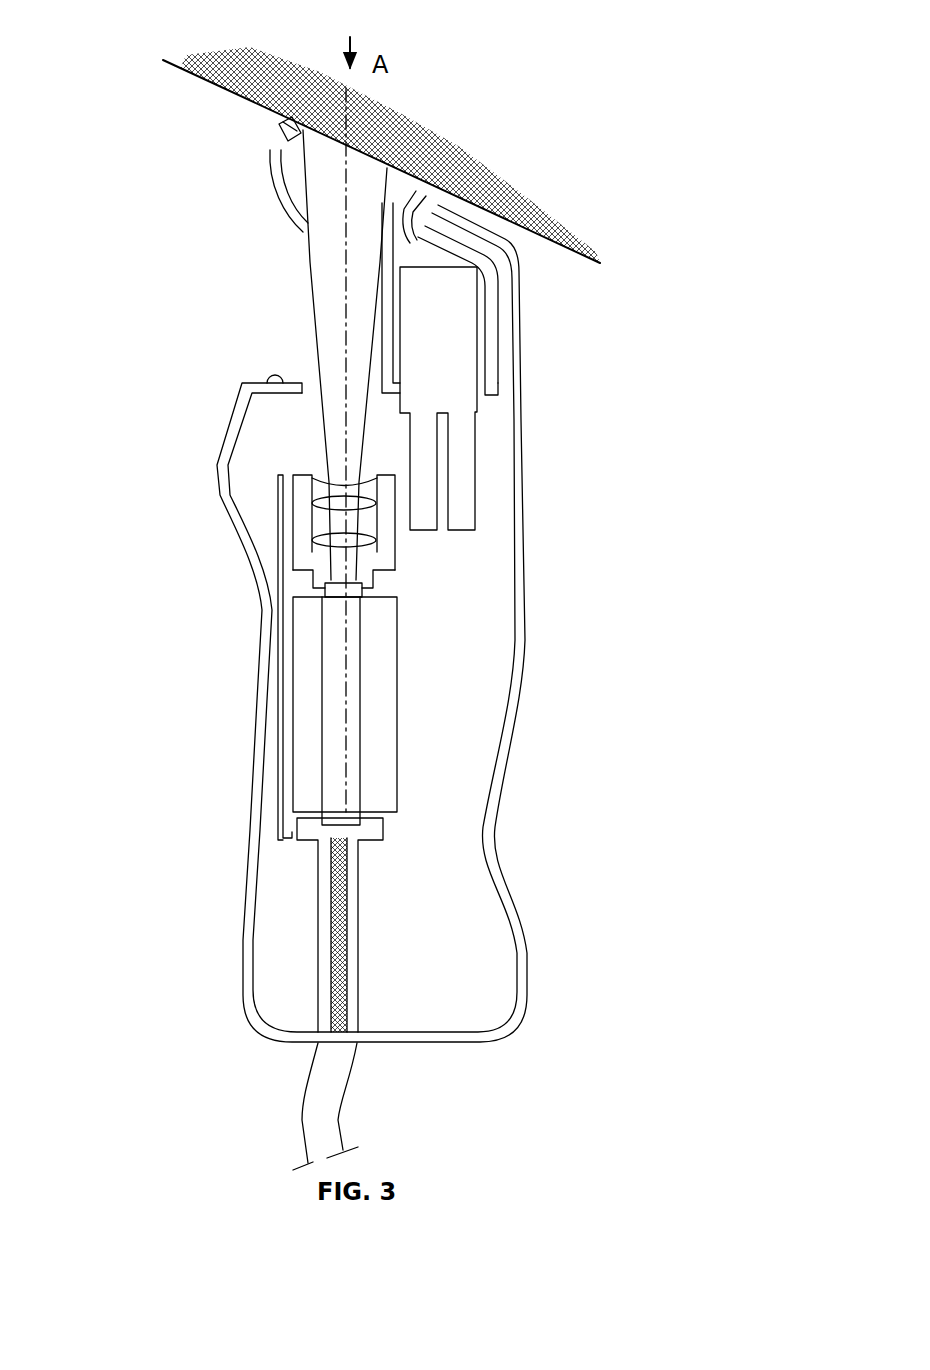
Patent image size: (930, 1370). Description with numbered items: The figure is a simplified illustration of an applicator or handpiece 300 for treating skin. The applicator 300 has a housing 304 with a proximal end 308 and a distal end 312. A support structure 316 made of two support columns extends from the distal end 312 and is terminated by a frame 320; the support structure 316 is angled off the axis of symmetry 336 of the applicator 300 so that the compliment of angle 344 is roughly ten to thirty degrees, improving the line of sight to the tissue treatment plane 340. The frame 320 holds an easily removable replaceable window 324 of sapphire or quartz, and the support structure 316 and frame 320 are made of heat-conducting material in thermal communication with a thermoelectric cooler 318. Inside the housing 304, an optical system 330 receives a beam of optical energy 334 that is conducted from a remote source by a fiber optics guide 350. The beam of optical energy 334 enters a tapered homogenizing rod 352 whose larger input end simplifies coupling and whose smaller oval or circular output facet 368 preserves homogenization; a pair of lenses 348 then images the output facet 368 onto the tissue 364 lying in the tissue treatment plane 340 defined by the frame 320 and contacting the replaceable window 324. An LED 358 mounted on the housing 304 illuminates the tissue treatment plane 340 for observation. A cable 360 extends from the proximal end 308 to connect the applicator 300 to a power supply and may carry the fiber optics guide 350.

The applicator 300 is at (148, 584).
The housing 304 is at (253, 803).
The proximal end 308 is at (180, 1060).
The distal end 312 is at (216, 241).
The support structure 316 is at (273, 178).
The thermoelectric cooler 318 is at (438, 398).
The frame 320 is at (284, 128).
The replaceable window 324 is at (323, 127).
The optical system 330 is at (281, 697).
The beam of optical energy 334 is at (330, 265).
The axis of symmetry 336 is at (348, 297).
The tissue treatment plane 340 is at (352, 232).
The compliment of angle 344 is at (437, 204).
The pair of lenses 348 is at (301, 520).
The fiber optics guide 350 is at (348, 917).
The tapered homogenizing rod 352 is at (355, 678).
The LED 358 is at (266, 372).
The cable 360 is at (313, 1102).
The tissue 364 is at (558, 262).
The output facet 368 is at (334, 600).